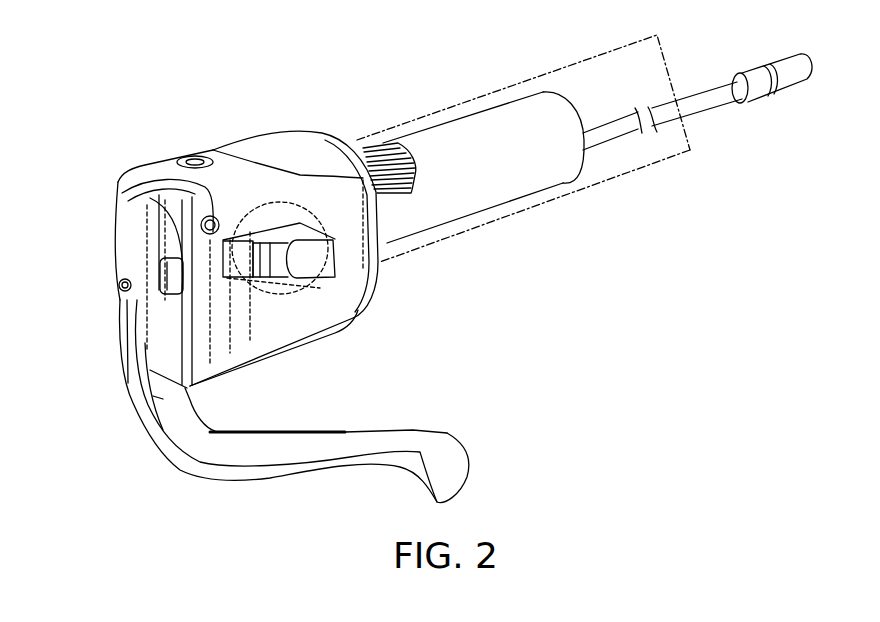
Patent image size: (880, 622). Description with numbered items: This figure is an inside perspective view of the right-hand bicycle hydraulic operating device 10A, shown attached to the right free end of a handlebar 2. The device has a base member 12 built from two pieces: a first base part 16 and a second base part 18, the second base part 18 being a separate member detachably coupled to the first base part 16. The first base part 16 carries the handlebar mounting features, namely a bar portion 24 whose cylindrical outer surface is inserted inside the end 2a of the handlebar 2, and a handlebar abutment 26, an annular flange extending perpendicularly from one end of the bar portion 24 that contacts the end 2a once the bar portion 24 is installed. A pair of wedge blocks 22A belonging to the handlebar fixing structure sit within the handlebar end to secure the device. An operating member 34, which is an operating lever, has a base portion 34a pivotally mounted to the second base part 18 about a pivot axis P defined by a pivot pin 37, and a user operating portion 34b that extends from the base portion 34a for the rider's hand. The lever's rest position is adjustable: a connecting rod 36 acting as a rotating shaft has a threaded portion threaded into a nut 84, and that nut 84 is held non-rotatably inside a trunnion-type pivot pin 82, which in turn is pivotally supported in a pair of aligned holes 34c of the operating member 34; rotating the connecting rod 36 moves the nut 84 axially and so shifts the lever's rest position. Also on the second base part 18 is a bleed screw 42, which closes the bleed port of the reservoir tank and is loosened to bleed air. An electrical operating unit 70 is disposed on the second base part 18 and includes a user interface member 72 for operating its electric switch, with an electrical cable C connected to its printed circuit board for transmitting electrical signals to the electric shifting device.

The bicycle hydraulic operating device 10A is at (150, 116).
The pivot axis P is at (117, 208).
The base member 12 is at (405, 72).
The second base part 18 is at (283, 125).
The first base part 16 is at (450, 112).
The bleed screw 42 is at (199, 150).
The pivot pin 37 is at (219, 216).
The nut 84 is at (182, 245).
The base portion 34a is at (118, 240).
The pivot pin 82 is at (170, 280).
The connecting rod 36 is at (112, 300).
The aligned holes 34c is at (172, 290).
The operating unit 70 is at (280, 304).
The user interface member 72 is at (318, 258).
The handlebar abutment 26 is at (376, 258).
The user operating portion 34b is at (350, 430).
The operating member 34 is at (272, 487).
The wedge blocks 22A is at (385, 170).
The bar portion 24 is at (507, 102).
The electrical cable C is at (707, 86).
The handlebar 2 is at (629, 185).
The end of the handlebar 2a is at (454, 232).